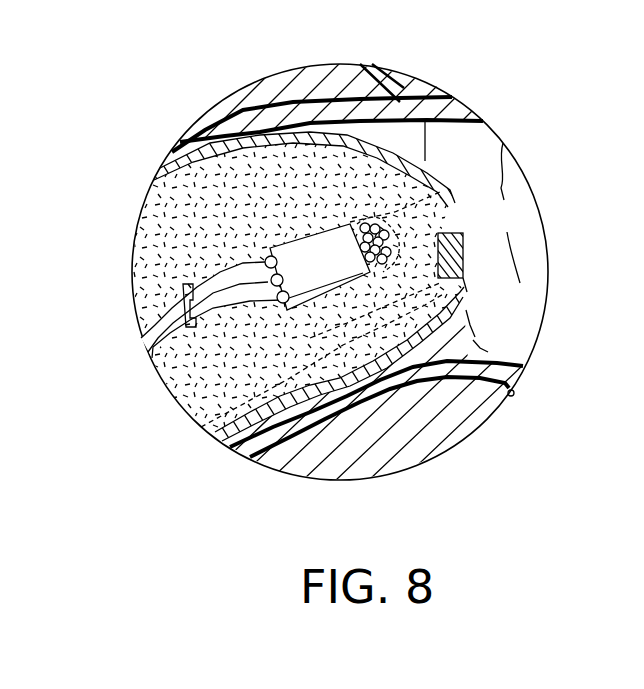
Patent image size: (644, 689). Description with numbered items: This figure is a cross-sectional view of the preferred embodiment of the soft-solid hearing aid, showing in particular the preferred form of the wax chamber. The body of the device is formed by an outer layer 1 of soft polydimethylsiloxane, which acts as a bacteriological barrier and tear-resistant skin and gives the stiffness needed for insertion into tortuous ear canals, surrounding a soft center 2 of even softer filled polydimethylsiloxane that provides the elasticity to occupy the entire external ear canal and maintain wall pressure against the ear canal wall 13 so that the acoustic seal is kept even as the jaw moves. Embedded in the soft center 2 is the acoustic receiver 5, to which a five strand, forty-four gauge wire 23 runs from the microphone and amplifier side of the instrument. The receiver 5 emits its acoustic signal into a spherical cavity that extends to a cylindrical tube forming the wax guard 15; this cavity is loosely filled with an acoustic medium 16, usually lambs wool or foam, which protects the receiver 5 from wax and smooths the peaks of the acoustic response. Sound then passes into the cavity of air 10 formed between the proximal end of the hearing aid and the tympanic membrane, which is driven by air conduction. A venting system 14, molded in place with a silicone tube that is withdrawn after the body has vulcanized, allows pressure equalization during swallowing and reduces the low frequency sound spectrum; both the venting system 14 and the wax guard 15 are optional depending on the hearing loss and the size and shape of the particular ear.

The outer layer 1 is at (392, 101).
The soft center 2 is at (230, 214).
The acoustic receiver 5 is at (322, 273).
The cavity of air 10 is at (508, 230).
The ear canal wall 13 is at (498, 368).
The venting system 14 is at (238, 400).
The wax guard 15 is at (449, 217).
The acoustic medium 16 is at (372, 228).
The wire 23 is at (184, 291).